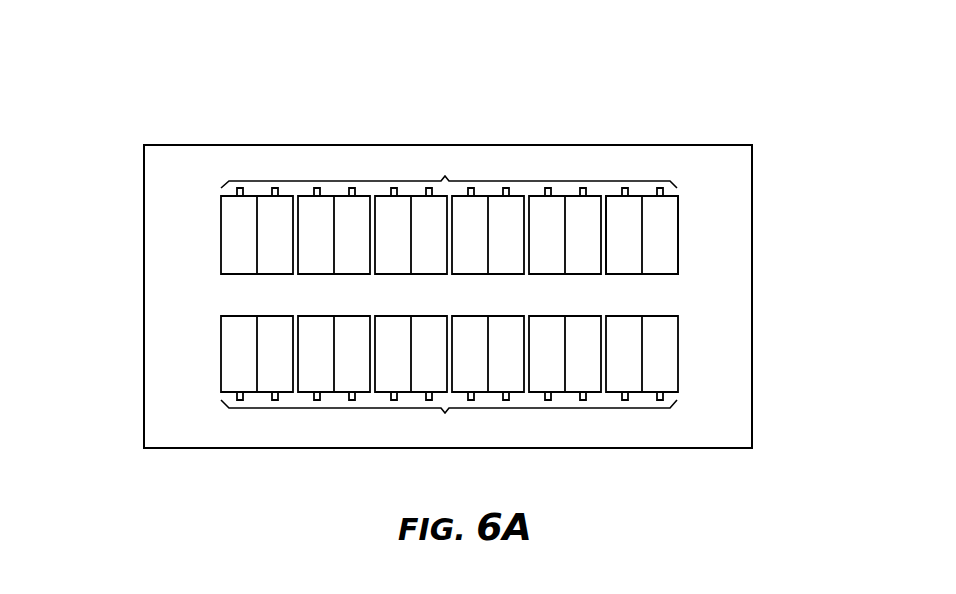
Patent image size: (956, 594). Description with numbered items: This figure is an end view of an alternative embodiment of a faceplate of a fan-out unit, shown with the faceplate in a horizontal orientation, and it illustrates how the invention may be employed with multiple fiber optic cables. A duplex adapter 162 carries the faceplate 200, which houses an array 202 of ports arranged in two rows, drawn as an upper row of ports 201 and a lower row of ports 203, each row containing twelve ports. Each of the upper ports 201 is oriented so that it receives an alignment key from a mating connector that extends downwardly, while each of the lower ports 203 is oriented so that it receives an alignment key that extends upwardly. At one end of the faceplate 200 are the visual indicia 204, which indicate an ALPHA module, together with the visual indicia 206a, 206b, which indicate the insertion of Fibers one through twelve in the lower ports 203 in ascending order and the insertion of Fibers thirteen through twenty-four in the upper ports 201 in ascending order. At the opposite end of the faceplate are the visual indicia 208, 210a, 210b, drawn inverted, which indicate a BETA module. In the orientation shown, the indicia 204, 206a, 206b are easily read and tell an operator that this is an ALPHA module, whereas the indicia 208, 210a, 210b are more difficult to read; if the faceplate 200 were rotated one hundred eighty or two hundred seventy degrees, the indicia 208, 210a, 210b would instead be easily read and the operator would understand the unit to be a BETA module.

The duplex adapter 162 is at (683, 95).
The faceplate 200 is at (700, 275).
The ports 201 is at (449, 170).
The array 202 is at (678, 273).
The ports 203 is at (449, 423).
The visual indicia 204 is at (173, 193).
The visual indicia 206a is at (183, 397).
The visual indicia 206b is at (168, 252).
The visual indicia 208 is at (723, 423).
The visual indicia 210a is at (738, 182).
The visual indicia 210b is at (725, 353).